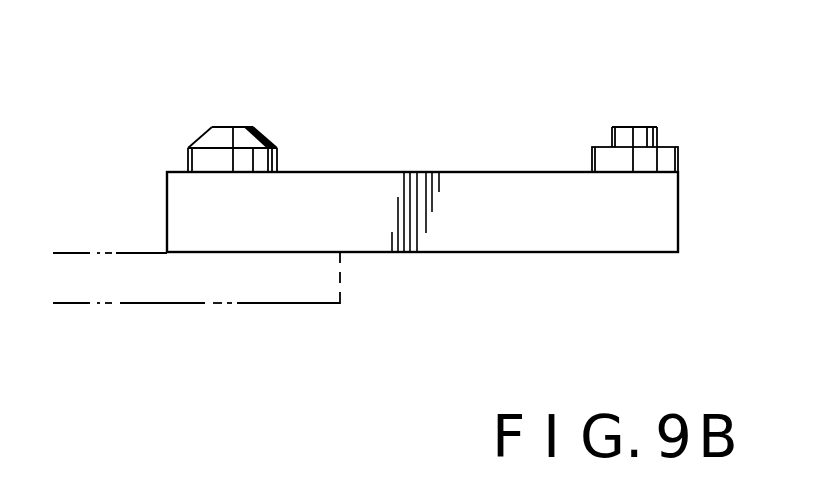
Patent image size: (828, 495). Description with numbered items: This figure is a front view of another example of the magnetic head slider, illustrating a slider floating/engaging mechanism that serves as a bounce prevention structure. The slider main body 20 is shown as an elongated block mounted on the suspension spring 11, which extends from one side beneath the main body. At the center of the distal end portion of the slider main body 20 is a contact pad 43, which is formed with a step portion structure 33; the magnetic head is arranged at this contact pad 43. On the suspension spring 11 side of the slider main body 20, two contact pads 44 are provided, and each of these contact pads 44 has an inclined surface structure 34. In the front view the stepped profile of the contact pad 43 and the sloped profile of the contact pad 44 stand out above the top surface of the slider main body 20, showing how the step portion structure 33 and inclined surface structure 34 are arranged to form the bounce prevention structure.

The suspension spring 11 is at (140, 303).
The slider main body 20 is at (570, 240).
The step portion structure 33 is at (602, 143).
The inclined surface structure 34 is at (197, 147).
The contact pad 43 is at (680, 160).
The contact pad 44 is at (278, 158).